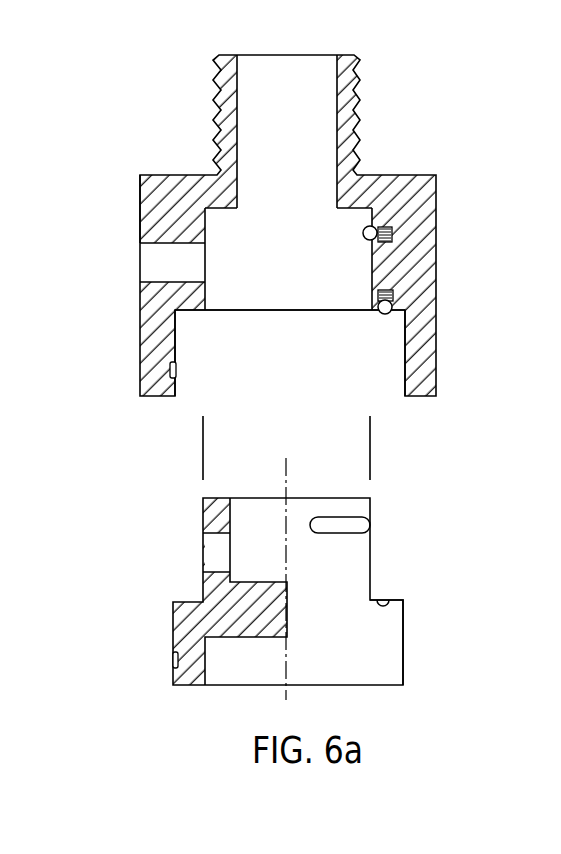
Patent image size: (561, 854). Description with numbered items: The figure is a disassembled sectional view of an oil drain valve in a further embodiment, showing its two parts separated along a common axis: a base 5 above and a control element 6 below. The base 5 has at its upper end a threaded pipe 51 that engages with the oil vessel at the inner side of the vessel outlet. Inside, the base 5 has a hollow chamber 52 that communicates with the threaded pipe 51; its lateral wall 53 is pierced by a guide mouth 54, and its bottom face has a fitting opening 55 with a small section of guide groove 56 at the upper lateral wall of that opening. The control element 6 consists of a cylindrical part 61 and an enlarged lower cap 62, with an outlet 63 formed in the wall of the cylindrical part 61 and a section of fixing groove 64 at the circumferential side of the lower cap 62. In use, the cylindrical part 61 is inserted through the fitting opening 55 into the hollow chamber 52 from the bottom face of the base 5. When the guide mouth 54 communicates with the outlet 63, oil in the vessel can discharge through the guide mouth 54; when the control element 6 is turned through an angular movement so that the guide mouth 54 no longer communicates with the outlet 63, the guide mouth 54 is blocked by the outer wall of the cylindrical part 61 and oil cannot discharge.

The base 5 is at (396, 164).
The threaded pipe 51 is at (355, 108).
The hollow chamber 52 is at (237, 240).
The lateral wall 53 is at (160, 213).
The guide mouth 54 is at (148, 262).
The fitting opening 55 is at (320, 357).
The guide groove 56 is at (173, 378).
The control element 6 is at (383, 594).
The cylindrical part 61 is at (362, 565).
The lower cap 62 is at (397, 625).
The outlet 63 is at (208, 557).
The fixing groove 64 is at (172, 662).